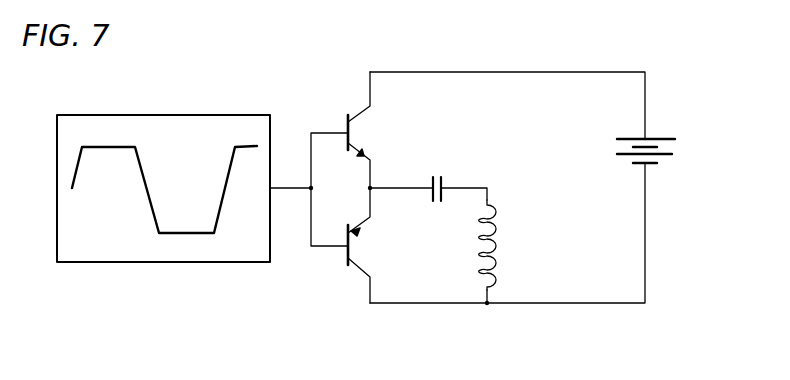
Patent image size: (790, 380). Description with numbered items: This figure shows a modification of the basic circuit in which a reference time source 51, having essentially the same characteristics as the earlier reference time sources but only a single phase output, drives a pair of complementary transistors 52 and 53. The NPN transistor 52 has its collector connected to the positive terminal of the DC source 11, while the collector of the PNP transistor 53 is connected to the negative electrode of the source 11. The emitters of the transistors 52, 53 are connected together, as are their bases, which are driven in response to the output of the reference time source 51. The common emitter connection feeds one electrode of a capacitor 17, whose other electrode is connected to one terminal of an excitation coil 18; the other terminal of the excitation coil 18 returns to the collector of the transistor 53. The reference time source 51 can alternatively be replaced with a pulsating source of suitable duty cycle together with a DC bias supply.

The reference time source 51 is at (175, 114).
The NPN transistor 52 is at (348, 120).
The PNP transistor 53 is at (347, 253).
The capacitor 17 is at (442, 181).
The excitation coil 18 is at (498, 229).
The DC source 11 is at (660, 139).